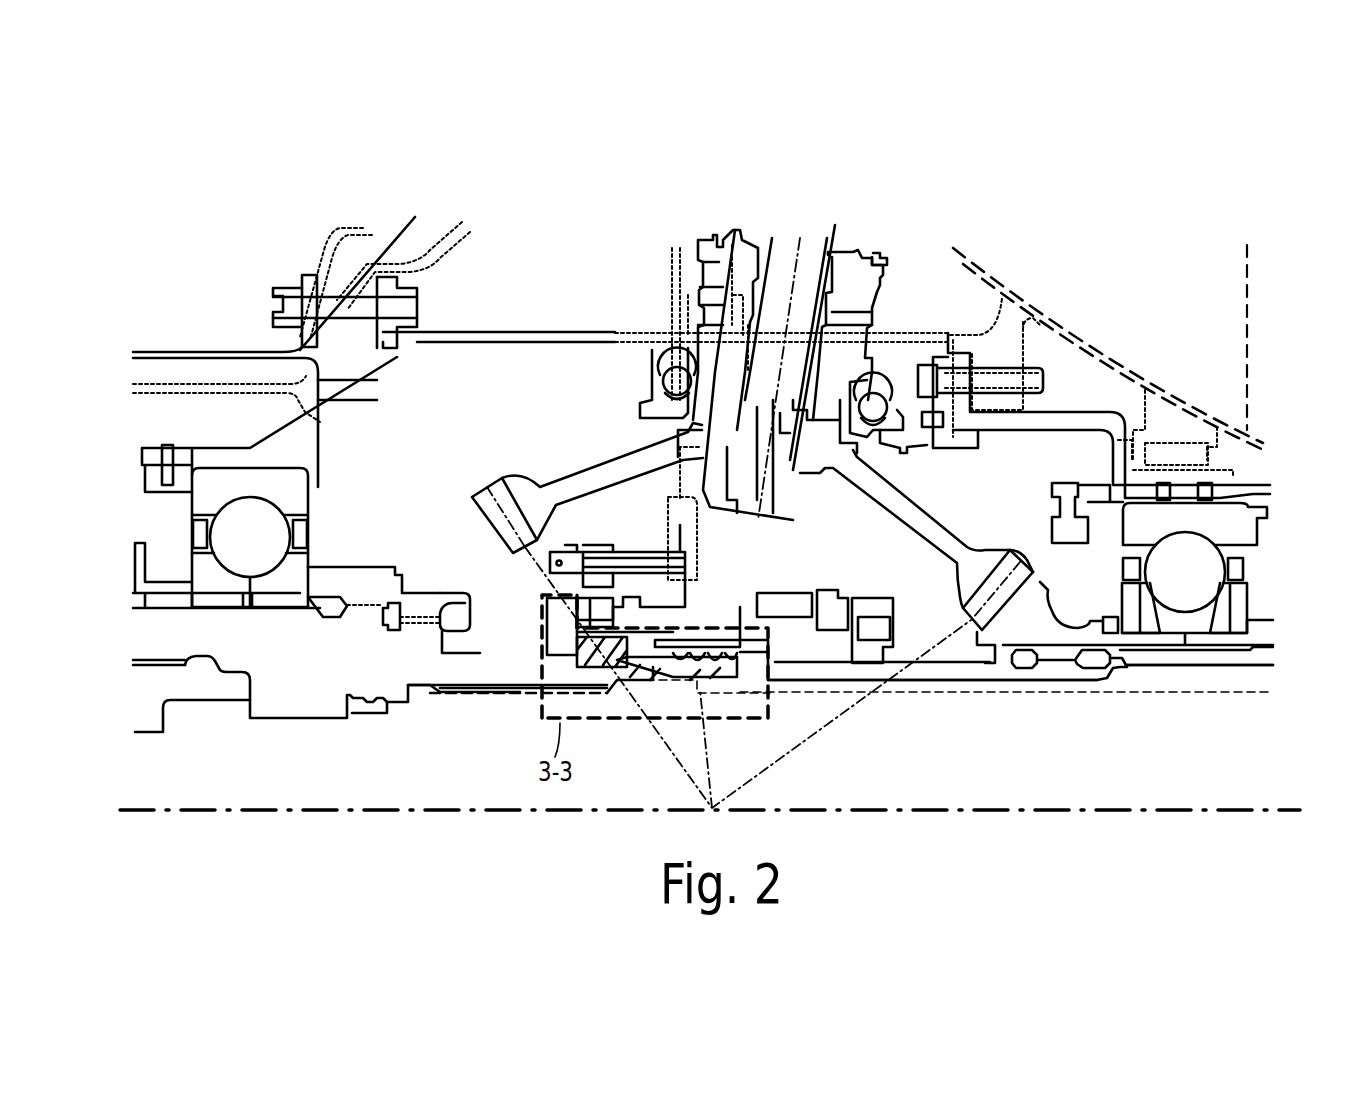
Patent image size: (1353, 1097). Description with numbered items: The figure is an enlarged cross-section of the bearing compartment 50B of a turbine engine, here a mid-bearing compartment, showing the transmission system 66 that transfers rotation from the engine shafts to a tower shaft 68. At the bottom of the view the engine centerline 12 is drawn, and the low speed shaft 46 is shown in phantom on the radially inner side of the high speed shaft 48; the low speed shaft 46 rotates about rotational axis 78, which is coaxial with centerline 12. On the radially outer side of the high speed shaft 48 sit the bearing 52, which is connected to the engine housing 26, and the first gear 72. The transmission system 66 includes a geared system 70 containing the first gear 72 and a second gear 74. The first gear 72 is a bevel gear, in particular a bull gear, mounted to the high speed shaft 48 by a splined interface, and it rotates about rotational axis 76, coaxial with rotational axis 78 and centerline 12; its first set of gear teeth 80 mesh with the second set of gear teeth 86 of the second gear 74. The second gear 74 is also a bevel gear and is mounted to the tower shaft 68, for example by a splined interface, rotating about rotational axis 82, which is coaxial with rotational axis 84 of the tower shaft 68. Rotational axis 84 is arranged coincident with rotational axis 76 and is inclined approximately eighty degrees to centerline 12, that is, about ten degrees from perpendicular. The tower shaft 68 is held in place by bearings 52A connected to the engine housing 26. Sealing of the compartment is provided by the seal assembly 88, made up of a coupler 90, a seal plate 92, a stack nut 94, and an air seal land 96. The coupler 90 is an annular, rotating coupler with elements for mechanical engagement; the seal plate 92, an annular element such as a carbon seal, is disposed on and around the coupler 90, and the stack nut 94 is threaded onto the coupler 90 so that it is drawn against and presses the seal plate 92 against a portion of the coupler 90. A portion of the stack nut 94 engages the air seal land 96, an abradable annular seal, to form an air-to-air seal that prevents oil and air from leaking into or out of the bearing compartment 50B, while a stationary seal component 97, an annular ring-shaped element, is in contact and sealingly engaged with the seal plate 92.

The centerline 12 is at (710, 776).
The rotational axis of first gear 76 is at (710, 776).
The rotational axis of low speed shaft 78 is at (315, 780).
The engine housing 26 is at (1182, 423).
The bearing compartment 50B is at (520, 316).
The transmission system 66 is at (706, 220).
The tower shaft 68 is at (835, 225).
The rotational axis of second gear 82 is at (778, 341).
The rotational axis of tower shaft 84 is at (792, 273).
The bearings 52A is at (677, 378).
The bearing 52 is at (290, 520).
The geared system 70 is at (556, 440).
The second gear 74 is at (915, 500).
The second set of gear teeth 86 is at (477, 485).
The stationary seal component 97 is at (600, 607).
The seal plate 92 is at (547, 610).
The coupler 90 is at (563, 670).
The seal assembly 88 is at (662, 723).
The stack nut 94 is at (715, 690).
The air seal land 96 is at (817, 653).
The first set of gear teeth 80 is at (1050, 593).
The first gear 72 is at (1066, 627).
The low speed shaft 46 is at (985, 694).
The high speed shaft 48 is at (1097, 672).